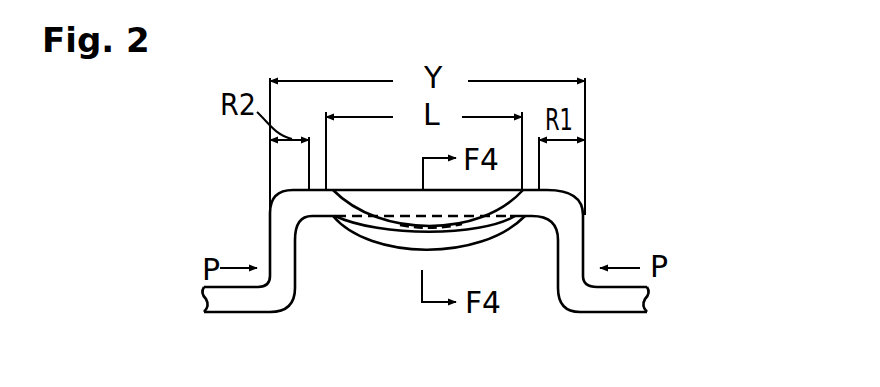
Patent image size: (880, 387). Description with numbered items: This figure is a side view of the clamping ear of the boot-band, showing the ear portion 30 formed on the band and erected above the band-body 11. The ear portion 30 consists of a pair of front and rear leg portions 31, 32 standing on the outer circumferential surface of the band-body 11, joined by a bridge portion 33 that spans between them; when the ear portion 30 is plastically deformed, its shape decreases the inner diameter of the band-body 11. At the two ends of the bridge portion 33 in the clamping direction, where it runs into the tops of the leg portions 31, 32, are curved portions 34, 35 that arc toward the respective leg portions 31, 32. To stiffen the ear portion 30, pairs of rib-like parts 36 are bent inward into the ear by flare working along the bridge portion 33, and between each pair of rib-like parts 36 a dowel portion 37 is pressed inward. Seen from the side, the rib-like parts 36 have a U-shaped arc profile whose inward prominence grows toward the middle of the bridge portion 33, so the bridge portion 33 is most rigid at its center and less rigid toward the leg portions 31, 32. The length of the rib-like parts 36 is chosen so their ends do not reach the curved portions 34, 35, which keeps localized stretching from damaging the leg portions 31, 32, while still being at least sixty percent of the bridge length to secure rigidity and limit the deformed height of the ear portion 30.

The ear portion 30 is at (628, 155).
The front leg portion 31 is at (574, 247).
The rear leg portion 32 is at (271, 240).
The bridge portion 33 is at (383, 189).
The curved portion 34 is at (566, 206).
The curved portion 35 is at (287, 204).
The rib-like parts 36 is at (377, 218).
The dowel portion 37 is at (408, 251).
The band-body 11 is at (233, 313).